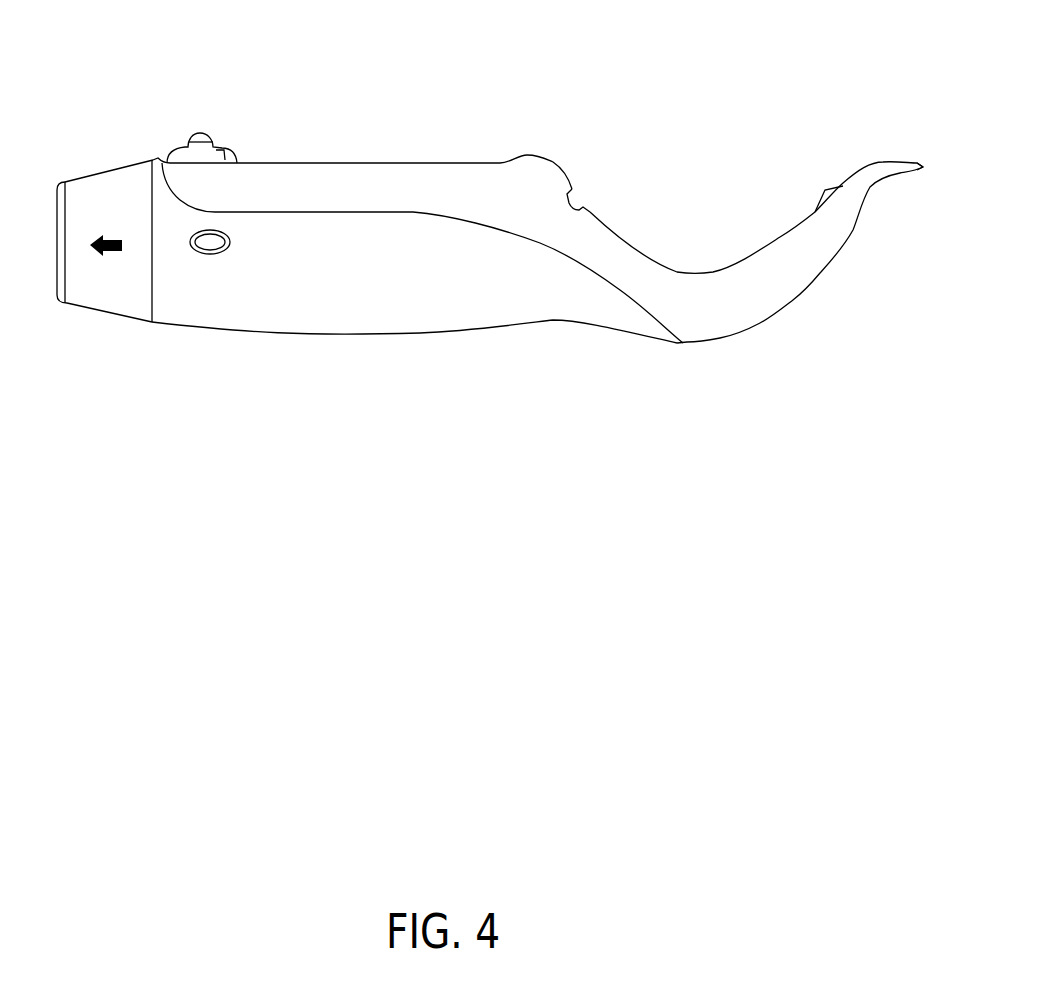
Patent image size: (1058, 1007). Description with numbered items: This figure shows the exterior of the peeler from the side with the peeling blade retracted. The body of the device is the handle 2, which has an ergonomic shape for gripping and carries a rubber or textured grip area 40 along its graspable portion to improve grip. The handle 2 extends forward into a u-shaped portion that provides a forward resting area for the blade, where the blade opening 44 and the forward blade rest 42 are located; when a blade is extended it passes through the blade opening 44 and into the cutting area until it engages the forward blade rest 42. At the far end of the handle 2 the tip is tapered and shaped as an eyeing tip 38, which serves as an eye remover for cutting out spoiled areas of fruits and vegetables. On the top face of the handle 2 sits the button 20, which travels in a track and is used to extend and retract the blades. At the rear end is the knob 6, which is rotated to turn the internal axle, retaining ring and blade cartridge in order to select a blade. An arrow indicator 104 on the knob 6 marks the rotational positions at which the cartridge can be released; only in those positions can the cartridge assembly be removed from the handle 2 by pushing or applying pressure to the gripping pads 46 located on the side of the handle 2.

The handle 2 is at (377, 183).
The knob 6 is at (98, 288).
The button 20 is at (197, 138).
The eyeing tip 38 is at (919, 163).
The grip area 40 is at (515, 313).
The forward blade rest 42 is at (825, 190).
The blade opening 44 is at (578, 195).
The gripping pads 46 is at (213, 252).
The arrow indicator 104 is at (97, 233).